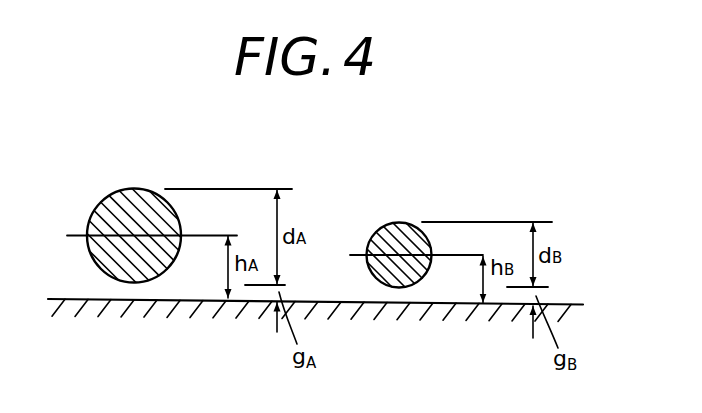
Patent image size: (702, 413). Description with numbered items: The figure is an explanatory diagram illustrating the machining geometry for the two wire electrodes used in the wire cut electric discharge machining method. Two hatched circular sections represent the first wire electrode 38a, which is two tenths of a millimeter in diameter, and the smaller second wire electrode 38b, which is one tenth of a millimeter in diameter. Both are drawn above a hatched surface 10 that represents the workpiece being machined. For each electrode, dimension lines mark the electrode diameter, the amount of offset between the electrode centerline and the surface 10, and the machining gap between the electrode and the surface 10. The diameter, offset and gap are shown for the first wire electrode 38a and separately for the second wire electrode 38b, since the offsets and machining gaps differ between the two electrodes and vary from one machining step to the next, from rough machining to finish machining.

The substrate surface 10 is at (92, 306).
The first wire electrode 38a is at (137, 203).
The second wire electrode 38b is at (403, 234).